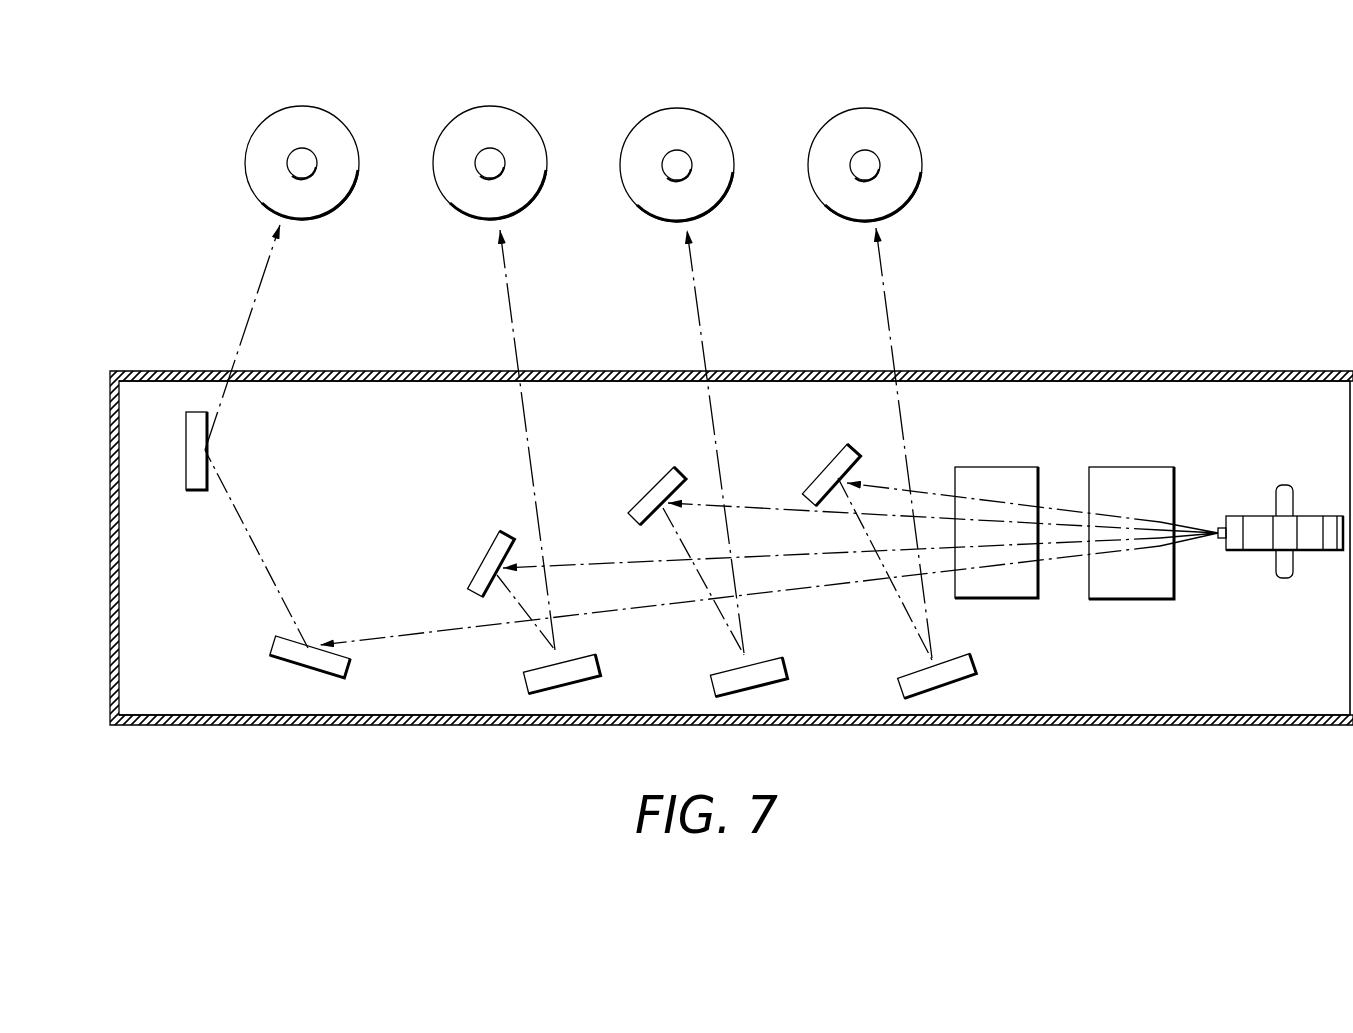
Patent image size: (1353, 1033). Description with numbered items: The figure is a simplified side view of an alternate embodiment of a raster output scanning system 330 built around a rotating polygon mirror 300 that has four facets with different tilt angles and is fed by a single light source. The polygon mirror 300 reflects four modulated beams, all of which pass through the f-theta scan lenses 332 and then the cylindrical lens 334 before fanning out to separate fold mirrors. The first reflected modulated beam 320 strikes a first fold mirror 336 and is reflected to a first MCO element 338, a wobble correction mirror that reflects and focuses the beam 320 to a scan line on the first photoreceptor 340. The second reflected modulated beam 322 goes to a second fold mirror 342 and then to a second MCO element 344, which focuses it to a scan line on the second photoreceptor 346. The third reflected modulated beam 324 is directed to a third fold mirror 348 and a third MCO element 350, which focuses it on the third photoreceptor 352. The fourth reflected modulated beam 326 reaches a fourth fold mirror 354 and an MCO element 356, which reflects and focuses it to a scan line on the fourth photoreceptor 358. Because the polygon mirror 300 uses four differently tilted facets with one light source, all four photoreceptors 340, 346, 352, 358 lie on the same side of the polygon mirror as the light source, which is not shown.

The rotating polygon mirror 300 is at (1333, 453).
The first reflected modulated beam 320 is at (886, 297).
The second reflected modulated beam 322 is at (706, 346).
The third reflected modulated beam 324 is at (519, 346).
The fourth reflected modulated beam 326 is at (265, 291).
The raster output scanning system 330 is at (1153, 127).
The f-theta scan lenses 332 is at (1140, 467).
The cylindrical lens 334 is at (997, 467).
The first fold mirror 336 is at (842, 455).
The first MCO element 338 is at (972, 678).
The first photoreceptor 340 is at (825, 137).
The second fold mirror 342 is at (675, 470).
The second MCO element 344 is at (783, 678).
The second photoreceptor 346 is at (637, 137).
The third fold mirror 348 is at (494, 534).
The third MCO element 350 is at (592, 678).
The third photoreceptor 352 is at (450, 136).
The fourth fold mirror 354 is at (313, 665).
The MCO element 356 is at (193, 487).
The fourth photoreceptor 358 is at (263, 136).